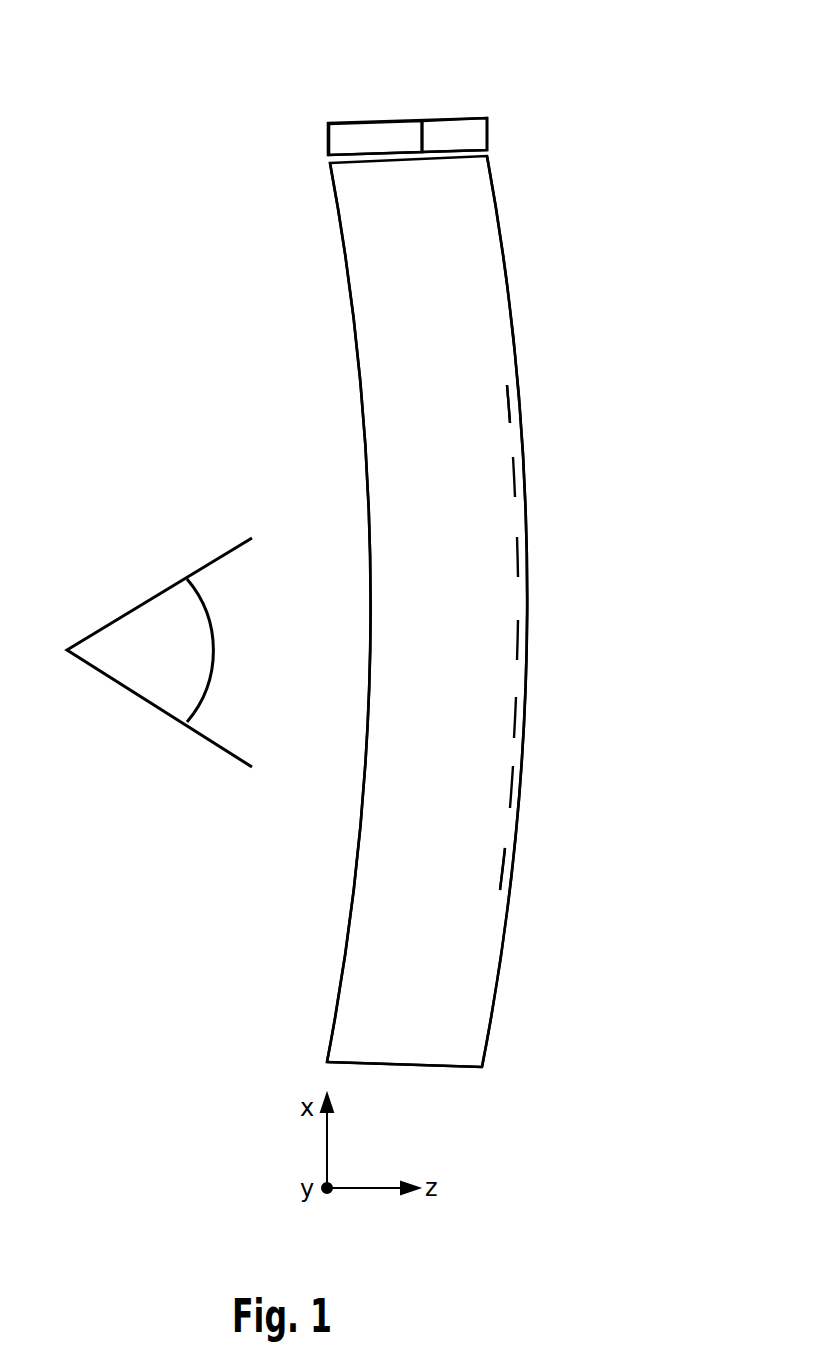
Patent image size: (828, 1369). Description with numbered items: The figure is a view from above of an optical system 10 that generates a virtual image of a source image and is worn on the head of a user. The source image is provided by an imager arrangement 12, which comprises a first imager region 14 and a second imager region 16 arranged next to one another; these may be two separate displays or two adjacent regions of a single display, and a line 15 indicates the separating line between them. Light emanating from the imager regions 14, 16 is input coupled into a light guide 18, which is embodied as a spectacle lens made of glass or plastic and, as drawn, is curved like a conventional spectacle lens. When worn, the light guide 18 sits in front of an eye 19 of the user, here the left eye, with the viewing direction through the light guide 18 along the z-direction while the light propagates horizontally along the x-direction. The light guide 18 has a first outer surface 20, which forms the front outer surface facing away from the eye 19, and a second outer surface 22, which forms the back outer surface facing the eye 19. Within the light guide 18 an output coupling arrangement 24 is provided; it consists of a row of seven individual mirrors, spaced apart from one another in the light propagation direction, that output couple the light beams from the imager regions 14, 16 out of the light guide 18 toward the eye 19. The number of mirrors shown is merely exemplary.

The optical system 10 is at (630, 190).
The imager arrangement 12 is at (475, 96).
The first imager region 14 is at (344, 141).
The line 15 is at (421, 133).
The second imager region 16 is at (477, 134).
The light guide 18 is at (498, 309).
The eye 19 is at (125, 613).
The first outer surface 20 is at (500, 993).
The second outer surface 22 is at (353, 930).
The output coupling arrangement 24 is at (530, 597).